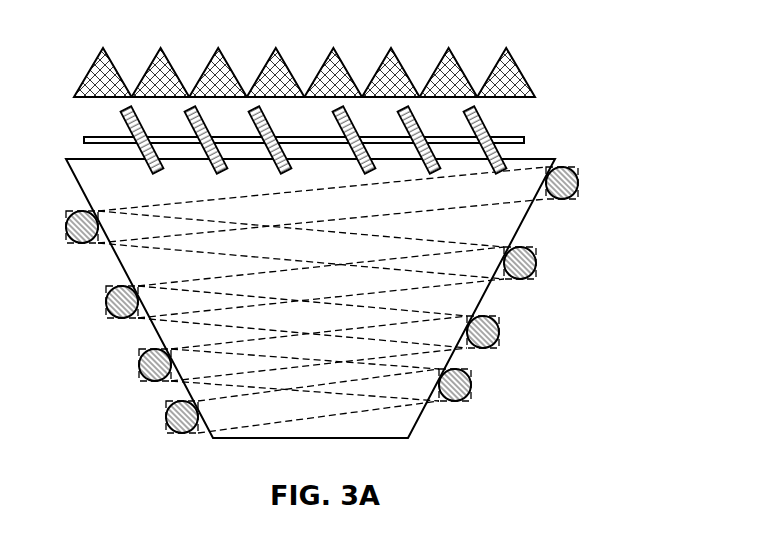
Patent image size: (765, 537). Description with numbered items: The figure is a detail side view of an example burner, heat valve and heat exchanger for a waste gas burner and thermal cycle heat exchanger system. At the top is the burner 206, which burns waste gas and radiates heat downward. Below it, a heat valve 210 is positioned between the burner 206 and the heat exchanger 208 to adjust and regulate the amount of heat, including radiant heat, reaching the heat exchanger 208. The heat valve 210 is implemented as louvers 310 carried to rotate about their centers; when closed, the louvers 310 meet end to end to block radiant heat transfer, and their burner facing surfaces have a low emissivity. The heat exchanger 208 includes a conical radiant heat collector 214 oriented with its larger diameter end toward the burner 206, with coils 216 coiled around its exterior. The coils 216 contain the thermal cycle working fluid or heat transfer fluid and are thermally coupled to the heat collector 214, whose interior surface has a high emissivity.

The burner 206 is at (512, 68).
The heat valve 210 is at (515, 125).
The louvers 310 is at (204, 118).
The radiant heat collector 214 is at (490, 293).
The coils 216 is at (570, 182).
The heat exchanger 208 is at (359, 298).